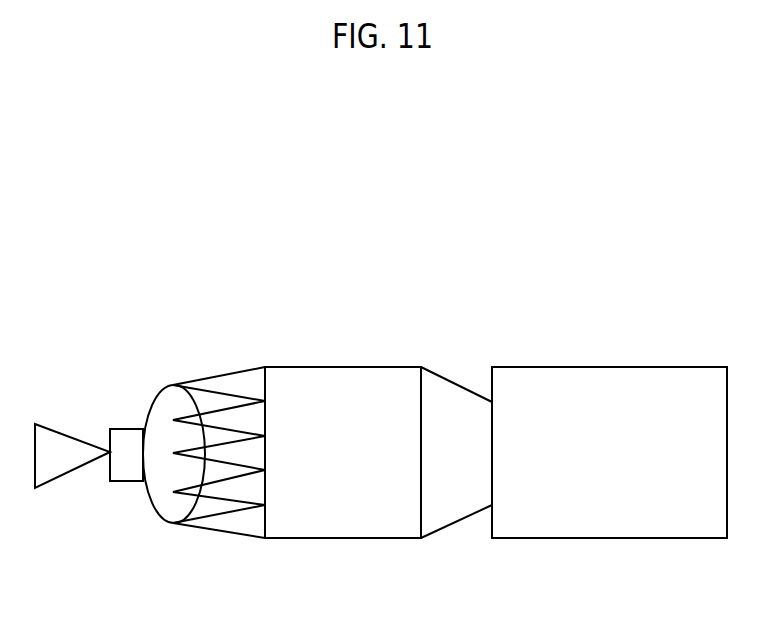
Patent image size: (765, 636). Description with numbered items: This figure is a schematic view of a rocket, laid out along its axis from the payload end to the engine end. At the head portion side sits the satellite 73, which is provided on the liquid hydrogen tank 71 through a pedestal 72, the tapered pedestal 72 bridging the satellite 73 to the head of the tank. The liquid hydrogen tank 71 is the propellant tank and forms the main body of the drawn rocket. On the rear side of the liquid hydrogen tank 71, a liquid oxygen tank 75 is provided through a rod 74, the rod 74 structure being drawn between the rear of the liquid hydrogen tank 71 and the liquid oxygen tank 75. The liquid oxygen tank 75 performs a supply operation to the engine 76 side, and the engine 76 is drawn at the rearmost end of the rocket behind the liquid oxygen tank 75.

The liquid hydrogen tank 71 is at (337, 367).
The pedestal 72 is at (460, 522).
The satellite 73 is at (627, 538).
The rod 74 is at (217, 532).
The liquid oxygen tank 75 is at (145, 412).
The engine 76 is at (55, 430).